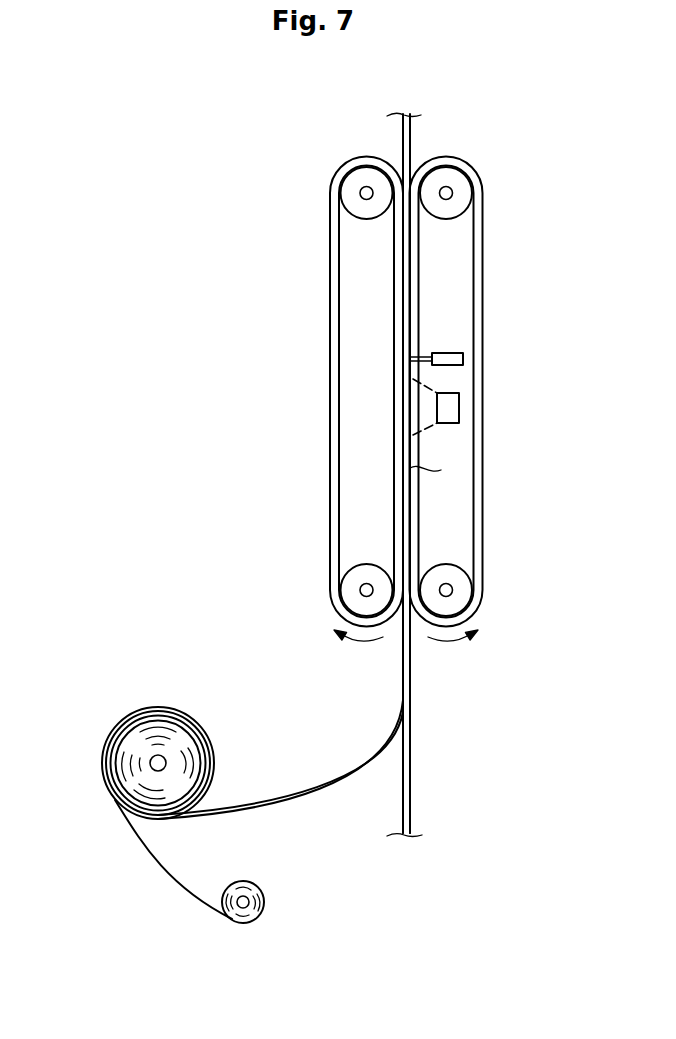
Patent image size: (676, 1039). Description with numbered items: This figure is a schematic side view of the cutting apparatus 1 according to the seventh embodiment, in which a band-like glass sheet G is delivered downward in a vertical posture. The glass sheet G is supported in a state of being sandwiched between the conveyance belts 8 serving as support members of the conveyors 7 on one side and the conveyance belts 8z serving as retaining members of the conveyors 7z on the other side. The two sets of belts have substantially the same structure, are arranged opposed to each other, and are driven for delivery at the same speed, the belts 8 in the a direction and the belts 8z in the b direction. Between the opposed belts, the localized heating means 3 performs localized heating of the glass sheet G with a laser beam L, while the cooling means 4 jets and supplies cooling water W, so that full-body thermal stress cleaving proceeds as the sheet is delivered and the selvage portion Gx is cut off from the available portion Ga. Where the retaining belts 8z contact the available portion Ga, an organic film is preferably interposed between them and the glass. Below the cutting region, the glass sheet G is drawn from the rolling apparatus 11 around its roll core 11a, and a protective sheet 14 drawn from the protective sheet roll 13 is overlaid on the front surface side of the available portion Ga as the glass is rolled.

The cutting apparatus 1 is at (569, 203).
The localized heating means 3 is at (475, 418).
The cooling means 4 is at (473, 343).
The conveyor 7 is at (363, 392).
The conveyance belt 8 is at (440, 306).
The conveyor 7z is at (488, 392).
The conveyance belt 8z is at (418, 245).
The rolling apparatus 11 is at (121, 729).
The roll core 11a is at (151, 757).
The protective sheet roll 13 is at (274, 914).
The protective sheet 14 is at (153, 863).
The band-like glass sheet G is at (401, 128).
The available portion Ga is at (287, 797).
The selvage portion Gx is at (411, 769).
The cooling water W is at (428, 352).
The laser beam L is at (429, 428).
The a direction a is at (349, 629).
The b direction b is at (462, 629).